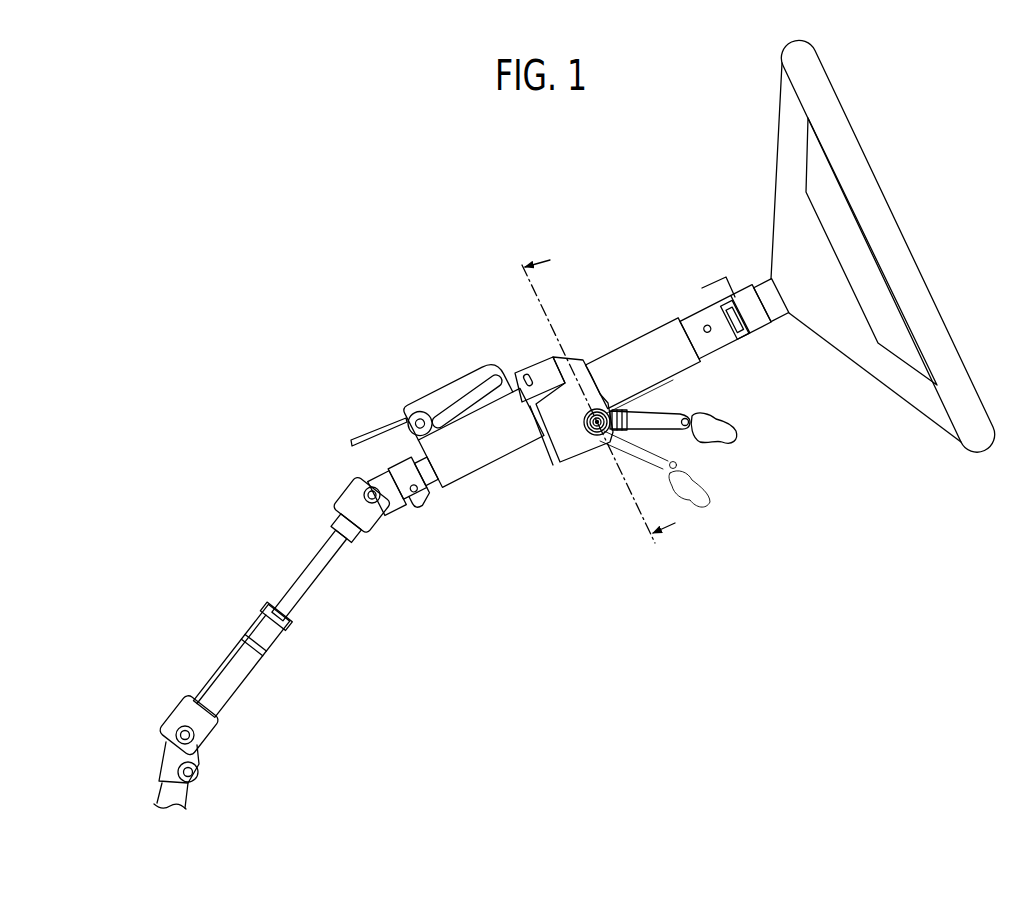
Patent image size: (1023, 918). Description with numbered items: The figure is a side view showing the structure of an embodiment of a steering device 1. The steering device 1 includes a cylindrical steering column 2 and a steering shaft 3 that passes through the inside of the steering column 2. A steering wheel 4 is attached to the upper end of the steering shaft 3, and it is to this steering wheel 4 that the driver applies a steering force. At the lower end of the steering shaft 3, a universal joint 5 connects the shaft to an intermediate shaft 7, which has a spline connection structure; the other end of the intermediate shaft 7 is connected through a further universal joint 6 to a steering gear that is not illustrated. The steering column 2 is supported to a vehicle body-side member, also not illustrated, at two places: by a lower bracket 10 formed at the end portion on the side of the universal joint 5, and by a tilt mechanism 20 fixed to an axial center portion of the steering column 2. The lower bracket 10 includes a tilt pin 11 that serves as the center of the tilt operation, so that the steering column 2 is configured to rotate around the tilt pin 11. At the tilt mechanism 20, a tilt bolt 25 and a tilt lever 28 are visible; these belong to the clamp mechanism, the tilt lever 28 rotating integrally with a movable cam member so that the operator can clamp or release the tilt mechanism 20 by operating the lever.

The steering device 1 is at (505, 321).
The steering column 2 is at (480, 460).
The steering shaft 3 is at (746, 296).
The steering wheel 4 is at (888, 233).
The universal joint 5 is at (340, 488).
The universal joint 6 is at (158, 712).
The intermediate shaft 7 is at (238, 622).
The lower bracket 10 is at (450, 366).
The tilt pin 11 is at (417, 412).
The tilt mechanism 20 is at (570, 352).
The tilt bolt 25 is at (596, 436).
The tilt lever 28 is at (672, 404).